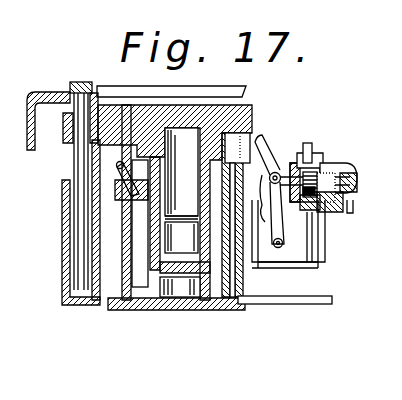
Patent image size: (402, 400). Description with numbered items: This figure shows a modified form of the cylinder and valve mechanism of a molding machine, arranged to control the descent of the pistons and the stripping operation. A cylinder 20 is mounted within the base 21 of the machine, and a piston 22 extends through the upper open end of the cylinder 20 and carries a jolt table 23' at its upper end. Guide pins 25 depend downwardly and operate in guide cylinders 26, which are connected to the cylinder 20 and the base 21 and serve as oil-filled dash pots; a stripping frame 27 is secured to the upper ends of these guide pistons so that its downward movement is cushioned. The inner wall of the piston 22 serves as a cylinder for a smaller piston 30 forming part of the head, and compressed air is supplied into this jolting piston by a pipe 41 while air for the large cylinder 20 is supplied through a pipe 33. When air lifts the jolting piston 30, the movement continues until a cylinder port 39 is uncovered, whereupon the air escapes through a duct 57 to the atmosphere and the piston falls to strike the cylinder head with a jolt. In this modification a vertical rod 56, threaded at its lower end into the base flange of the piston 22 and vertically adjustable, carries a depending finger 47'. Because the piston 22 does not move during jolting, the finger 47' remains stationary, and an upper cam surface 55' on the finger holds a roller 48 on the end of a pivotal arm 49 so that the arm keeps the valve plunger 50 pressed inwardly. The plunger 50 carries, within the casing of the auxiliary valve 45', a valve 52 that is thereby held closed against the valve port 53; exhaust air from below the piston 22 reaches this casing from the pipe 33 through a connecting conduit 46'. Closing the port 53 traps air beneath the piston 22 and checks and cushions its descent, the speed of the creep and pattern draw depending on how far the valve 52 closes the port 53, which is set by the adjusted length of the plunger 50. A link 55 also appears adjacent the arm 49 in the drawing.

The cylinder 20 is at (118, 290).
The base 21 is at (157, 196).
The piston 22 is at (155, 240).
The jolt table 23' is at (184, 96).
The guide pin 25 is at (73, 165).
The guide cylinder 26 is at (63, 304).
The stripping frame 27 is at (60, 92).
The piston 30 is at (181, 201).
The pipe 33 is at (292, 304).
The cylinder port 39 is at (205, 244).
The pipe 41 is at (181, 172).
The auxiliary valve 45' is at (309, 234).
The connecting conduit 46' is at (321, 165).
The finger 47' is at (252, 207).
The roller 48 is at (276, 172).
The pivotal arm 49 is at (283, 243).
The valve plunger 50 is at (340, 180).
The valve 52 is at (308, 197).
The valve port 53 is at (325, 166).
The link 55 is at (266, 206).
The cam surface 55' is at (287, 135).
The vertical rod 56 is at (225, 268).
The duct 57 is at (118, 168).